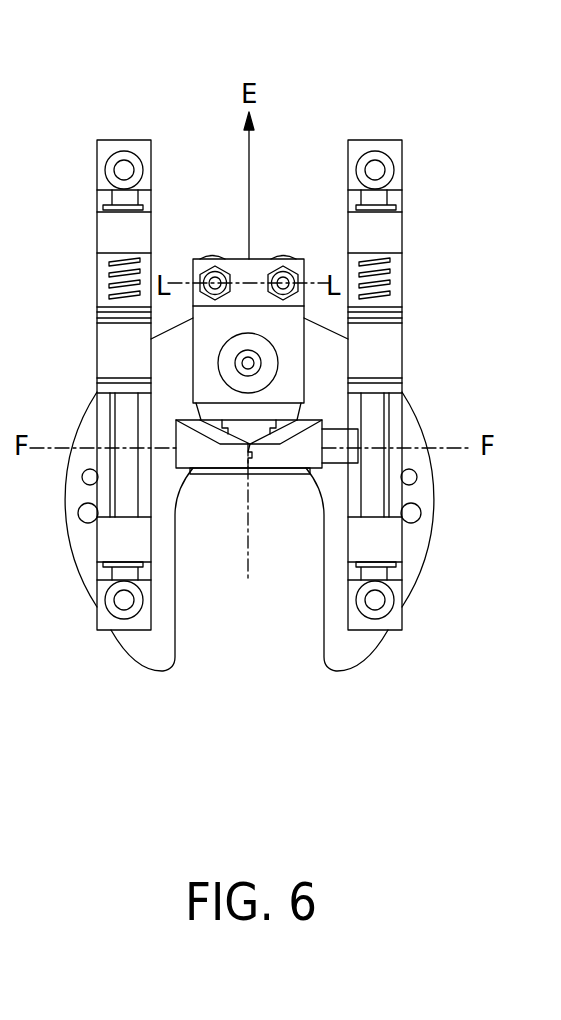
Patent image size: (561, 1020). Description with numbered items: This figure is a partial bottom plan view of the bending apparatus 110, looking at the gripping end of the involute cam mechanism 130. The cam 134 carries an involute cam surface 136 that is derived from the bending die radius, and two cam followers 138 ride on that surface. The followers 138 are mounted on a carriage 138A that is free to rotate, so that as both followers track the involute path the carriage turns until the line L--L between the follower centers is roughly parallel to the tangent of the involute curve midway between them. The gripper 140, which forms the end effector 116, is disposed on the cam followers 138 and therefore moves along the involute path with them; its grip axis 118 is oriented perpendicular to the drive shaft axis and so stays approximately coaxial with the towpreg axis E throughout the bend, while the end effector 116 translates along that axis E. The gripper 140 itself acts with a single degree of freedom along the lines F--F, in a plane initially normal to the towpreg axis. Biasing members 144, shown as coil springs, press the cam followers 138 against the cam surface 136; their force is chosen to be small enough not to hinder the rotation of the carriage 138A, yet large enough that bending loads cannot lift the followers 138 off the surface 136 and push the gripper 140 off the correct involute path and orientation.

The bending apparatus 110 is at (464, 163).
The end effector 116 is at (205, 455).
The grip axis 118 is at (247, 557).
The involute cam mechanism 130 is at (480, 507).
The cam 134 is at (88, 547).
The cam surface 136 is at (462, 645).
The cam followers 138 is at (246, 258).
The carriage 138A is at (300, 262).
The gripper 140 is at (290, 450).
The biasing members 144 is at (100, 292).